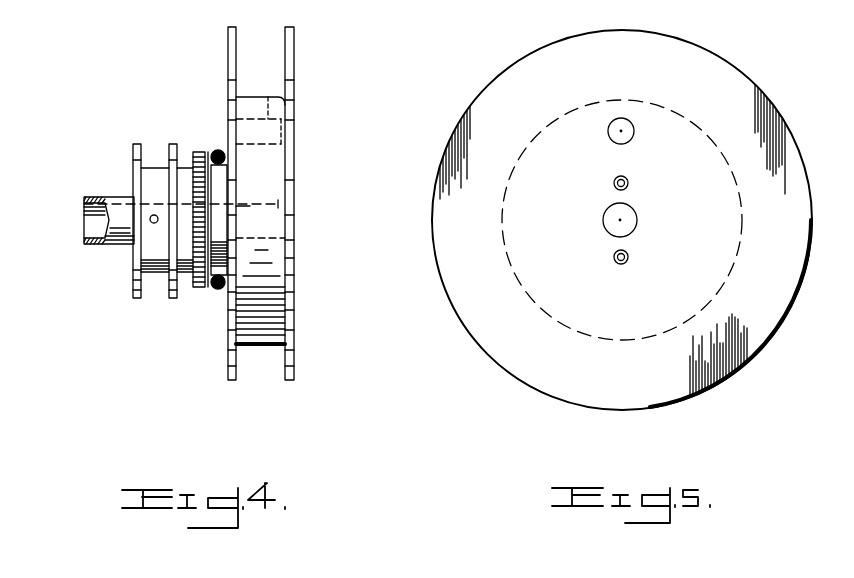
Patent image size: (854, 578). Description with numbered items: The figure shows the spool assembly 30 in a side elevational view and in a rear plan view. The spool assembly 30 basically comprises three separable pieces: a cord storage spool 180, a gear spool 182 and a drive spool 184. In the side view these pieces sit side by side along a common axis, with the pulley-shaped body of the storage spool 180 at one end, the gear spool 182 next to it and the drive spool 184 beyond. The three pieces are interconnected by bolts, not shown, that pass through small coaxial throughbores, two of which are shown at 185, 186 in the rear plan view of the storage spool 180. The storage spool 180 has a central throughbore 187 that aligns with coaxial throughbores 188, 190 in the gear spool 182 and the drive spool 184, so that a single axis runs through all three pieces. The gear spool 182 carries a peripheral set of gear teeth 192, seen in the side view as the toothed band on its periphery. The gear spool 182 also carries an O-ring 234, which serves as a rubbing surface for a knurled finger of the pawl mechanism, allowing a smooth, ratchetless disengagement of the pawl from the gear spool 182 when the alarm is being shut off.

In FIG. 4, the spool assembly 30 is at (128, 88).
In FIG. 4, the cord storage spool 180 is at (294, 327).
In FIG. 5, the cord storage spool 180 is at (667, 396).
In FIG. 4, the gear spool 182 is at (219, 181).
In FIG. 4, the drive spool 184 is at (134, 287).
In FIG. 5, the throughbore 185 is at (626, 180).
In FIG. 5, the throughbore 186 is at (628, 262).
In FIG. 4, the central throughbore 187 is at (285, 213).
In FIG. 5, the central throughbore 187 is at (637, 220).
In FIG. 4, the throughbore 188 is at (241, 206).
In FIG. 4, the throughbore 190 is at (92, 213).
In FIG. 4, the gear teeth 192 is at (202, 291).
In FIG. 4, the O-ring 234 is at (218, 150).